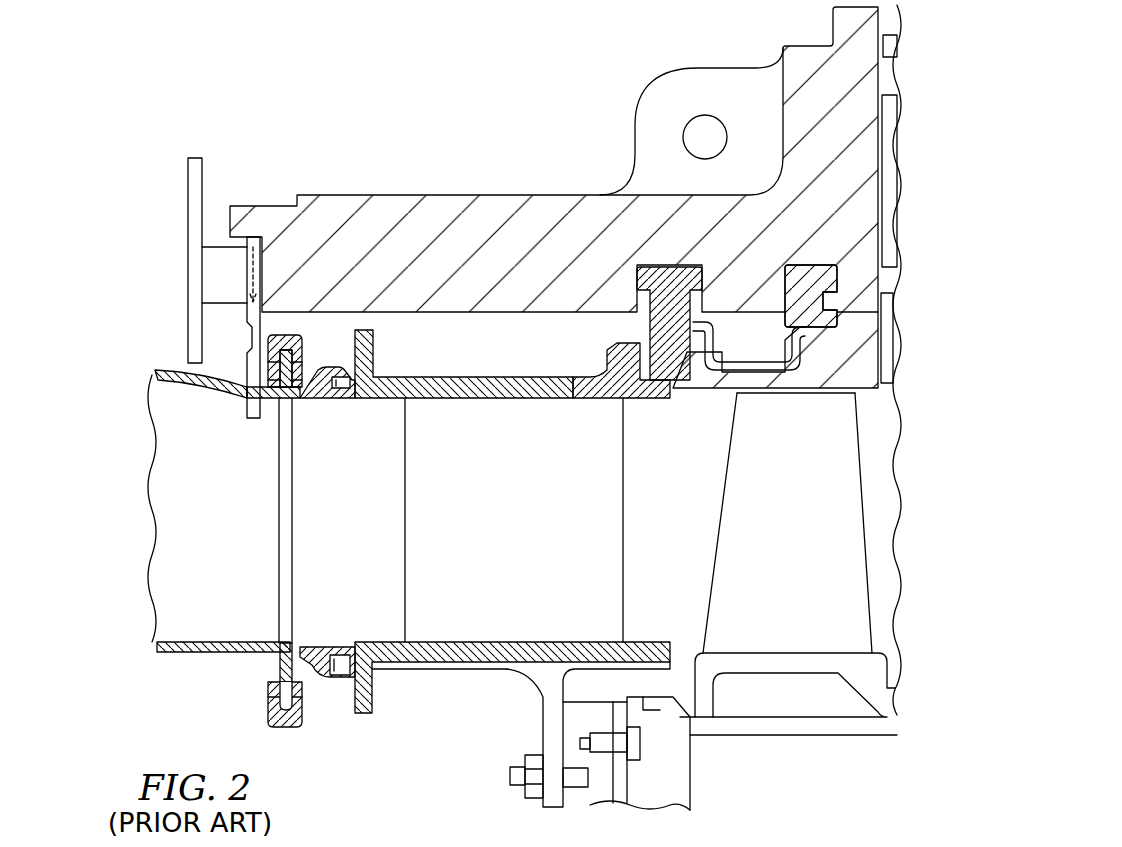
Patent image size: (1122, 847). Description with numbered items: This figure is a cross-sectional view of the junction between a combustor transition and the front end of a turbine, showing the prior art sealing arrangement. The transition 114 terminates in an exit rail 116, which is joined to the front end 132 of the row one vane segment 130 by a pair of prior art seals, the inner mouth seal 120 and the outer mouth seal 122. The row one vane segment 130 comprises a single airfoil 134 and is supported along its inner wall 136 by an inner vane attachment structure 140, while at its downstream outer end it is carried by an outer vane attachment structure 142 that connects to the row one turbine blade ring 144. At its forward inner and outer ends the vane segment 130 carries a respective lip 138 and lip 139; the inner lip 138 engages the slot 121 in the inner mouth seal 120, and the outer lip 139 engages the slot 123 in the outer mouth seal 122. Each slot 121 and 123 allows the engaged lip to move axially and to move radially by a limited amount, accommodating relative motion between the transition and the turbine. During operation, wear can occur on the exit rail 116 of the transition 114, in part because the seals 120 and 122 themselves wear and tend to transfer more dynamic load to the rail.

The transition 114 is at (228, 533).
The exit rail 116 is at (190, 384).
The inner mouth seal 120 is at (310, 648).
The slot 121 is at (335, 660).
The outer mouth seal 122 is at (307, 387).
The slot 123 is at (340, 380).
The row 1 vane segment 130 is at (623, 393).
The front end 132 is at (395, 400).
The airfoil 134 is at (528, 533).
The inner wall 136 is at (557, 673).
The lip 138 is at (347, 655).
The lip 139 is at (345, 402).
The inner vane attachment structure 140 is at (530, 798).
The outer vane attachment structure 142 is at (673, 292).
The row 1 turbine blade ring 144 is at (528, 268).